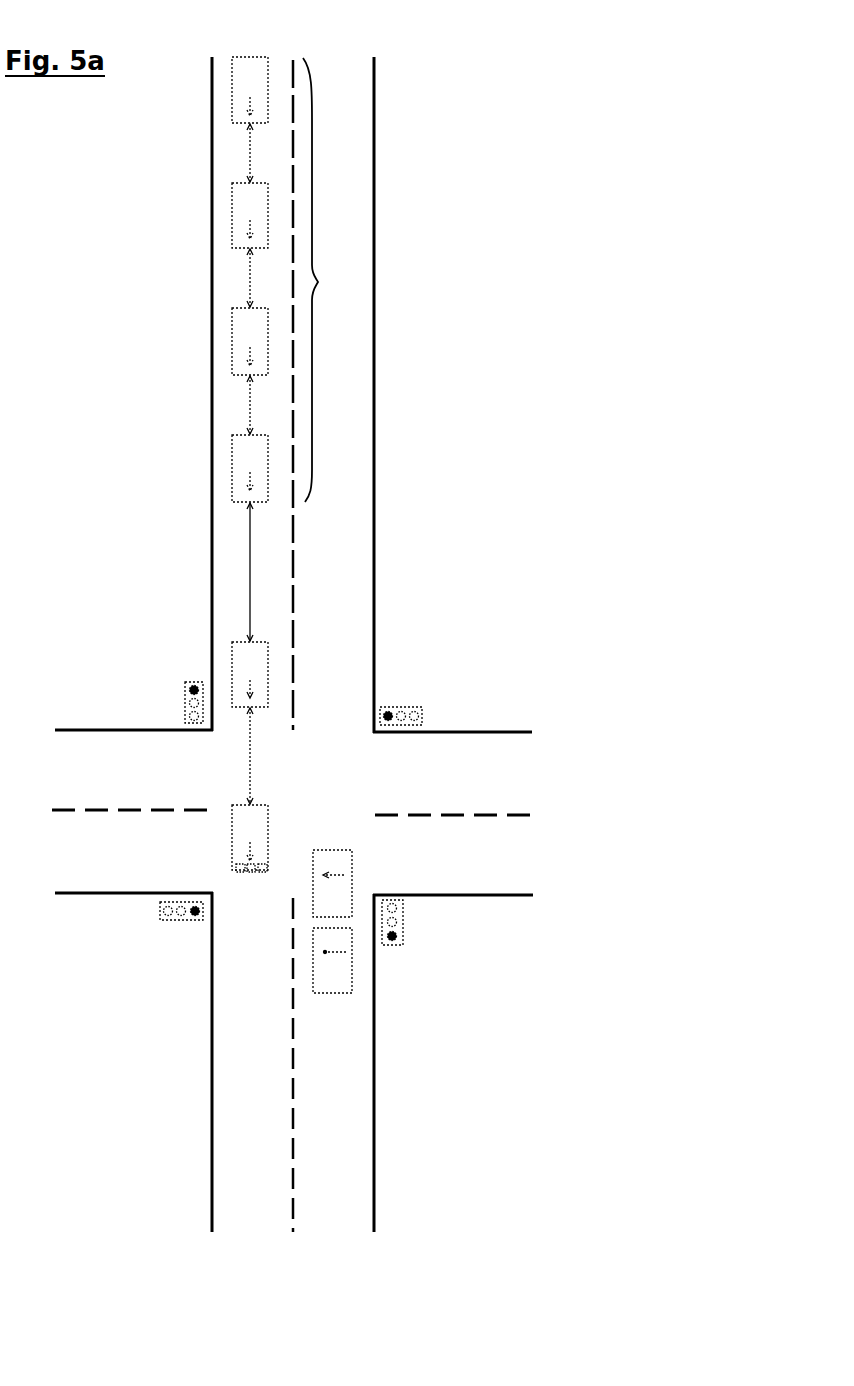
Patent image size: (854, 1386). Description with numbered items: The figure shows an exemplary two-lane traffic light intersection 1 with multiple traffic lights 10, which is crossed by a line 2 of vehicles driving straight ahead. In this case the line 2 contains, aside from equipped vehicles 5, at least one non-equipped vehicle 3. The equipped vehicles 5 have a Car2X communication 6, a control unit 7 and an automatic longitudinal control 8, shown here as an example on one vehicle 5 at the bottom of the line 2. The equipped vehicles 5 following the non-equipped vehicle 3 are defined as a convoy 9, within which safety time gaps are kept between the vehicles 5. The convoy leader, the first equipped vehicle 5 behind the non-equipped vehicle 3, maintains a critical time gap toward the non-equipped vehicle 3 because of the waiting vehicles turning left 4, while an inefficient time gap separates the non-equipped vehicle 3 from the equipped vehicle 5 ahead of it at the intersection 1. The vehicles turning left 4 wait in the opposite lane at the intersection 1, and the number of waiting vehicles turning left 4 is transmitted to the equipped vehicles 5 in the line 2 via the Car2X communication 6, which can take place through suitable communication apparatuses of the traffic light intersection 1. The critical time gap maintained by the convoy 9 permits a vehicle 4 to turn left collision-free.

The traffic light intersection 1 is at (418, 645).
The line of vehicles driving straight ahead 2 is at (250, 52).
The non-equipped vehicle 3 is at (256, 653).
The vehicle turning left 4 is at (332, 921).
The equipped vehicle 5 is at (256, 463).
The Car2X communication 6 is at (236, 870).
The control unit 7 is at (251, 873).
The automatic longitudinal control 8 is at (263, 872).
The convoy 9 is at (326, 280).
The traffic light 10 is at (183, 700).